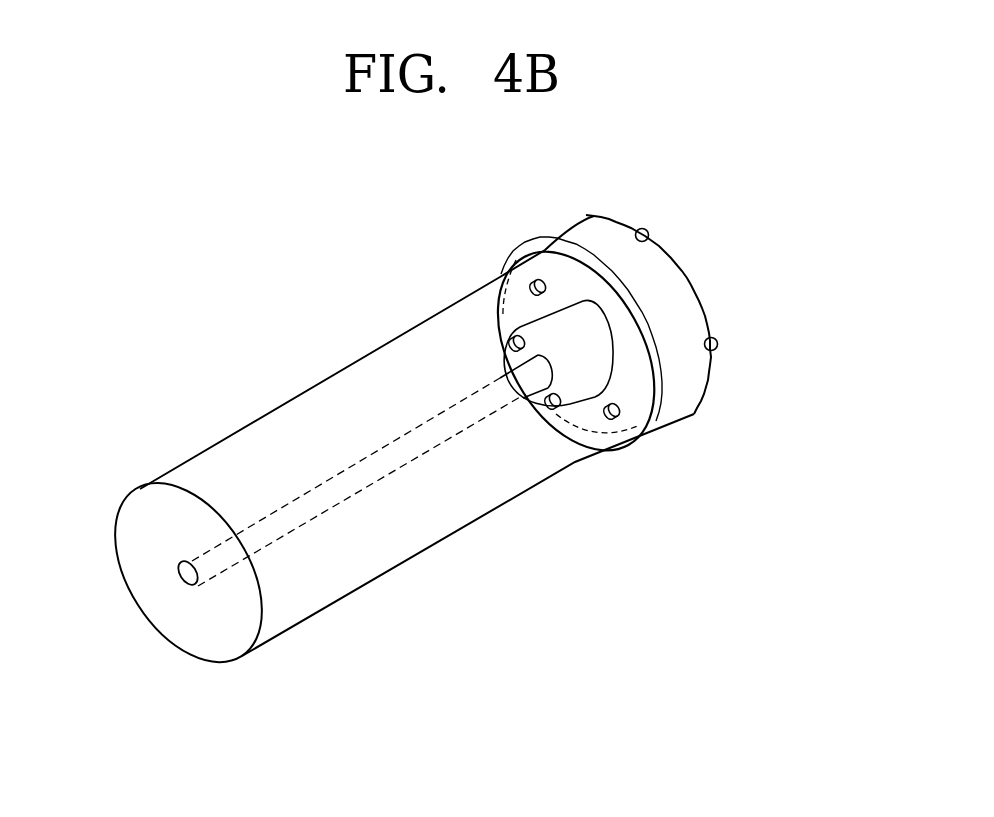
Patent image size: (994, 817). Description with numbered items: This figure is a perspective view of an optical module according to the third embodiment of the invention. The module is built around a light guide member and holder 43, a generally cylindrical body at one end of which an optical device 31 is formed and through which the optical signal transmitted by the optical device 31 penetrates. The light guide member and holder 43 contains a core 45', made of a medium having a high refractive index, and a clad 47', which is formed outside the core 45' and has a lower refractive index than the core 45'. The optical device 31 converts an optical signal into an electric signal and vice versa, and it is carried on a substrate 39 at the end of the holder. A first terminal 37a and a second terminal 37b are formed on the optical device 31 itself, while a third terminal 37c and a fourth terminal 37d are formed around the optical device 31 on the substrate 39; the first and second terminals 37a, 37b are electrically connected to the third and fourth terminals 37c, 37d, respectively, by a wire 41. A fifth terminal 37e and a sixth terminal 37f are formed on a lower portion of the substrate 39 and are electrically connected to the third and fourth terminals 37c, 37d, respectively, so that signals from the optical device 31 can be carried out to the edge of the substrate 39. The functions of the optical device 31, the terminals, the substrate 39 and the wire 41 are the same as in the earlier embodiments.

The optical device 31 is at (603, 337).
The first terminal 37a is at (557, 412).
The second terminal 37b is at (513, 338).
The third terminal 37c is at (622, 414).
The fourth terminal 37d is at (537, 282).
The fifth terminal 37e is at (718, 344).
The sixth terminal 37f is at (646, 229).
The substrate 39 is at (697, 394).
The wire 41 is at (590, 423).
The light guide member and holder 43 is at (238, 404).
The core 45' is at (326, 548).
The clad 47' is at (468, 535).